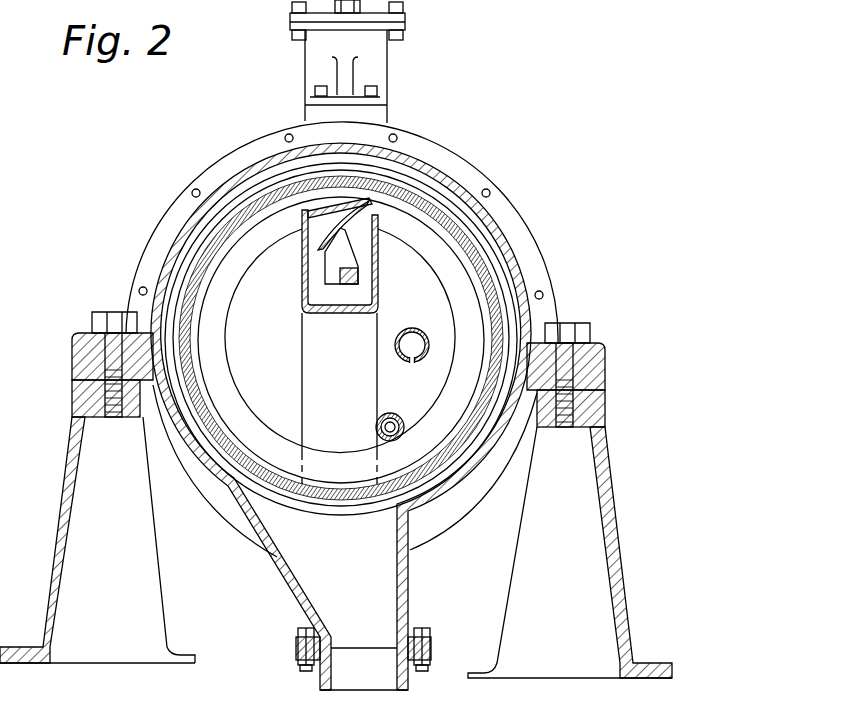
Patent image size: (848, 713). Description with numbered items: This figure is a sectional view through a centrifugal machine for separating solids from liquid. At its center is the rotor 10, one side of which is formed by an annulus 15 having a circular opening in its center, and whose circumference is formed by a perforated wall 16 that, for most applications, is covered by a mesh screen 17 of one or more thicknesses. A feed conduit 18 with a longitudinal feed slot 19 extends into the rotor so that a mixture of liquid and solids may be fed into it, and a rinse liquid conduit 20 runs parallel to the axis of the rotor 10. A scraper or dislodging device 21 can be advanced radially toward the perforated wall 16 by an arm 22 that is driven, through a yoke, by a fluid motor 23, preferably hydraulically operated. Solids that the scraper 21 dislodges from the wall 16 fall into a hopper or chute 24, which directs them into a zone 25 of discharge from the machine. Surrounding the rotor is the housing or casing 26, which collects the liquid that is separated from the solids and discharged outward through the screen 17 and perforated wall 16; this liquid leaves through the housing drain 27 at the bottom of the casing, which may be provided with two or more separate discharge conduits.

The rotor 10 is at (270, 367).
The annulus 15 is at (447, 317).
The perforated wall 16 is at (420, 195).
The mesh screen 17 is at (447, 210).
The feed conduit 18 is at (413, 329).
The longitudinal feed slot 19 is at (412, 361).
The rinse liquid conduit 20 is at (394, 423).
The scraper 21 is at (372, 206).
The arm 22 is at (358, 272).
The fluid motor 23 is at (322, 52).
The hopper 24 is at (314, 348).
The zone of discharge 25 is at (318, 463).
The housing 26 is at (295, 573).
The housing drain 27 is at (378, 605).